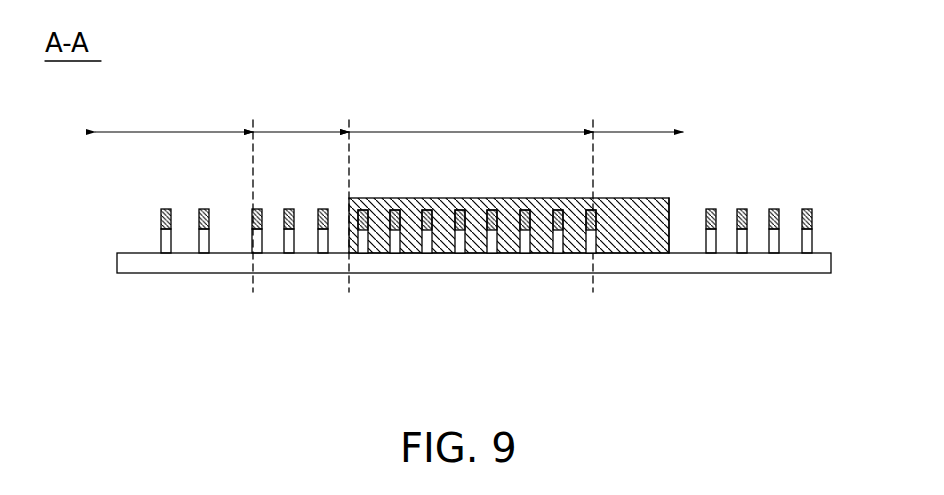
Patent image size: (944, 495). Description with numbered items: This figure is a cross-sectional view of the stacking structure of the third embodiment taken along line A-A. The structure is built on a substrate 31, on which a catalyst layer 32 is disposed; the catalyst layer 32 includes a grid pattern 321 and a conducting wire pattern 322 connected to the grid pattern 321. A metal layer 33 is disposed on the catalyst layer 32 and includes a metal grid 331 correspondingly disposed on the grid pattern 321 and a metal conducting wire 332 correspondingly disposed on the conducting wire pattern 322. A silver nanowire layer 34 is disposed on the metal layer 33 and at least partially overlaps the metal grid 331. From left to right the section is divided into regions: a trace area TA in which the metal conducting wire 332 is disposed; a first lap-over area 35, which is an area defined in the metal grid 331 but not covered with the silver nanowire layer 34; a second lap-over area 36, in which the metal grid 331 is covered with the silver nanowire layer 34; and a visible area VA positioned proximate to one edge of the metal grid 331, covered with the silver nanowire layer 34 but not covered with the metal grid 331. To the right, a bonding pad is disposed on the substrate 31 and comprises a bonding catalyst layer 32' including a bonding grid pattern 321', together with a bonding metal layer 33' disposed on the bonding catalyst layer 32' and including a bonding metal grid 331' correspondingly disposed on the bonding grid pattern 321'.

The substrate 31 is at (718, 262).
The catalyst layer 32 is at (617, 267).
The grid pattern 321 is at (421, 269).
The conducting wire pattern 322 is at (200, 250).
The metal layer 33 is at (526, 261).
The metal grid 331 is at (424, 190).
The metal conducting wire 332 is at (204, 209).
The silver nanowire layer 34 is at (670, 214).
The first lap-over area 35 is at (301, 194).
The second lap-over area 36 is at (471, 194).
The bonding grid pattern 321' is at (762, 276).
The bonding catalyst layer 32' is at (840, 276).
The bonding metal grid 331' is at (756, 189).
The bonding metal layer 33' is at (843, 189).
The trace area TA is at (174, 114).
The visible area VA is at (638, 114).